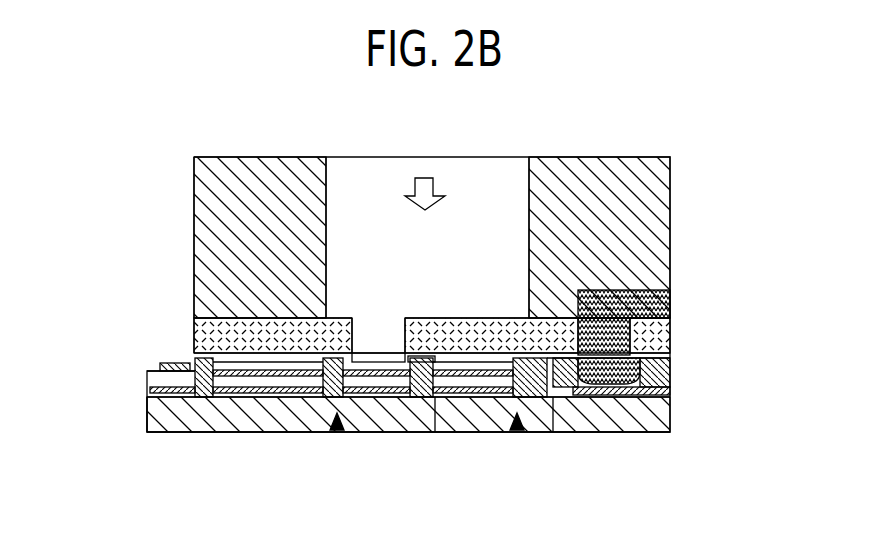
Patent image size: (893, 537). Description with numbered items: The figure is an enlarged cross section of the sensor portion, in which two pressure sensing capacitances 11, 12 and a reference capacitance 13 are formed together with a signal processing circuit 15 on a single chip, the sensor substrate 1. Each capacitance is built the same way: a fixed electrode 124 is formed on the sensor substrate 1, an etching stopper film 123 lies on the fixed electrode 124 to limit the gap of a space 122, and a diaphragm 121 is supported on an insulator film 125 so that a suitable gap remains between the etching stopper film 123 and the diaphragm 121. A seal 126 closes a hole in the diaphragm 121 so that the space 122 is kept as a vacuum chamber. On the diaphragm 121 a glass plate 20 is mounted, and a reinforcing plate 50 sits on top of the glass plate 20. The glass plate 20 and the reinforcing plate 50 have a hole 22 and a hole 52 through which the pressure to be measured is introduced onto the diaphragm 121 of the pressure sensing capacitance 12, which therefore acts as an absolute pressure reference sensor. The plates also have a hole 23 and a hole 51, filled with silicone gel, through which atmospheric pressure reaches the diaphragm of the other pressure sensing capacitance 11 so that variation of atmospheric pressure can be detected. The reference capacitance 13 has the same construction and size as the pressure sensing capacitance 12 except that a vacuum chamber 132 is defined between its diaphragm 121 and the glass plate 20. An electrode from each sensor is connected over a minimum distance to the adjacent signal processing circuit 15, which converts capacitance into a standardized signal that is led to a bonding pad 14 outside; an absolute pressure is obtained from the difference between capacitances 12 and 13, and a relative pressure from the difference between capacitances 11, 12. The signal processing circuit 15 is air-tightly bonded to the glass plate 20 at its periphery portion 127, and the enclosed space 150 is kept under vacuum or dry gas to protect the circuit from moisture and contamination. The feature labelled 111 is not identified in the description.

The sensor substrate 1 is at (672, 410).
The pressure sensing capacitance 11 is at (620, 435).
The pressure sensing capacitance 12 is at (337, 430).
The reference capacitance 13 is at (517, 432).
The bonding pad 14 is at (147, 371).
The signal processing circuit 15 is at (207, 432).
The glass plate 20 is at (672, 346).
The hole 22 is at (360, 318).
The hole 23 is at (672, 318).
The reinforcing plate 50 is at (672, 240).
The hole 51 is at (672, 300).
The hole 52 is at (378, 157).
The contact plug 111 is at (572, 357).
The diaphragm 121 is at (383, 365).
The space 122 is at (380, 400).
The etching stopper film 123 is at (415, 400).
The fixed electrode 124 is at (318, 392).
The insulator film 125 is at (672, 382).
The seal 126 is at (427, 356).
The periphery portion 127 is at (195, 357).
The vacuum chamber 132 is at (487, 362).
The space 150 is at (232, 357).